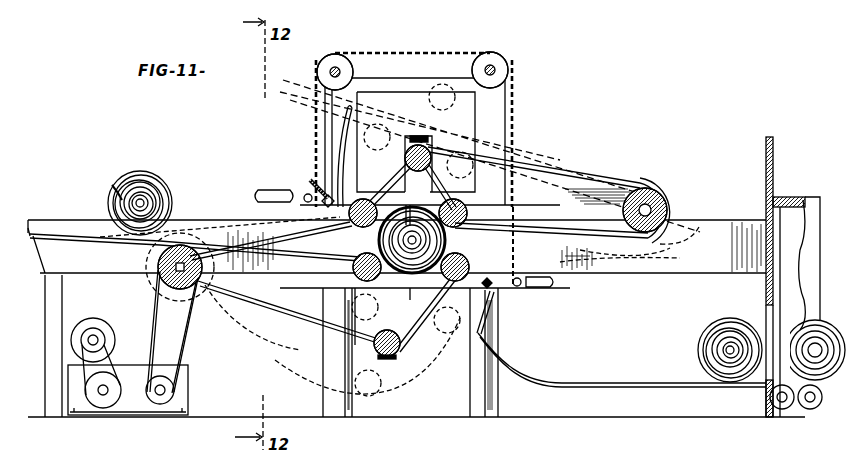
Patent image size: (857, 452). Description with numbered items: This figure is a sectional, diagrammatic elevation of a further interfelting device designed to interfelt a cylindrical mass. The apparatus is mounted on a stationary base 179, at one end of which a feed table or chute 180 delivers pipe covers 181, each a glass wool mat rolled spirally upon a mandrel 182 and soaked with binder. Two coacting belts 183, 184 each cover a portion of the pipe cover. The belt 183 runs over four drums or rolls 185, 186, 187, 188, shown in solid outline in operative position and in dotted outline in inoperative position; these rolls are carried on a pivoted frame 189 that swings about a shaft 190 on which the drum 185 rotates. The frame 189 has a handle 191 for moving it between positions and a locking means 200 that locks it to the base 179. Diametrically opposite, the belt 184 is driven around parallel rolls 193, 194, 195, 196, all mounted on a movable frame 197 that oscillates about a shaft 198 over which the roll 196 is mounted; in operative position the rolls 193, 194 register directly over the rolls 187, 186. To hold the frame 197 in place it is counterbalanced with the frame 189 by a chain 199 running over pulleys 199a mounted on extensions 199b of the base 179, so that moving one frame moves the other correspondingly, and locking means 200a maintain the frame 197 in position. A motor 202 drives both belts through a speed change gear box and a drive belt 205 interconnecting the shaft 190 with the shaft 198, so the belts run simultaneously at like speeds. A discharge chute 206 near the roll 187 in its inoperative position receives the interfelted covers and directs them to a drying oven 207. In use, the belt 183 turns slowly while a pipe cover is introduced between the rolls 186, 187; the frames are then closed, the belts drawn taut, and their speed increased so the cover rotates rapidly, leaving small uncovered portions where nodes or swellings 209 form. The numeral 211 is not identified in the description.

The stationary base 179 is at (70, 272).
The feed table or chute 180 is at (72, 205).
The pipe cover 181 is at (118, 182).
The mandrel 182 is at (140, 195).
The belt 183 is at (260, 232).
The belt 184 is at (558, 160).
The drum 185 is at (156, 280).
The roll 186 is at (355, 268).
The roll 187 is at (397, 316).
The roll 188 is at (396, 350).
The pivoted frame 189 is at (250, 286).
The shaft 190 is at (155, 259).
The handle 191 is at (280, 196).
The roll 193 is at (456, 200).
The roll 194 is at (370, 176).
The roll 195 is at (433, 152).
The roll or drum 196 is at (670, 210).
The movable frame 197 is at (387, 184).
The shaft 198 is at (638, 243).
The chain 199 is at (418, 50).
The pulleys 199a is at (332, 55).
The extensions 199b is at (332, 108).
The locking means 200 is at (496, 300).
The locking means 200a is at (308, 180).
The motor 202 is at (110, 340).
The drive belt 205 is at (186, 332).
The discharge chute 206 is at (540, 372).
The drying oven 207 is at (810, 190).
The nodes or swellings 209 is at (372, 245).
The element 211 is at (415, 450).